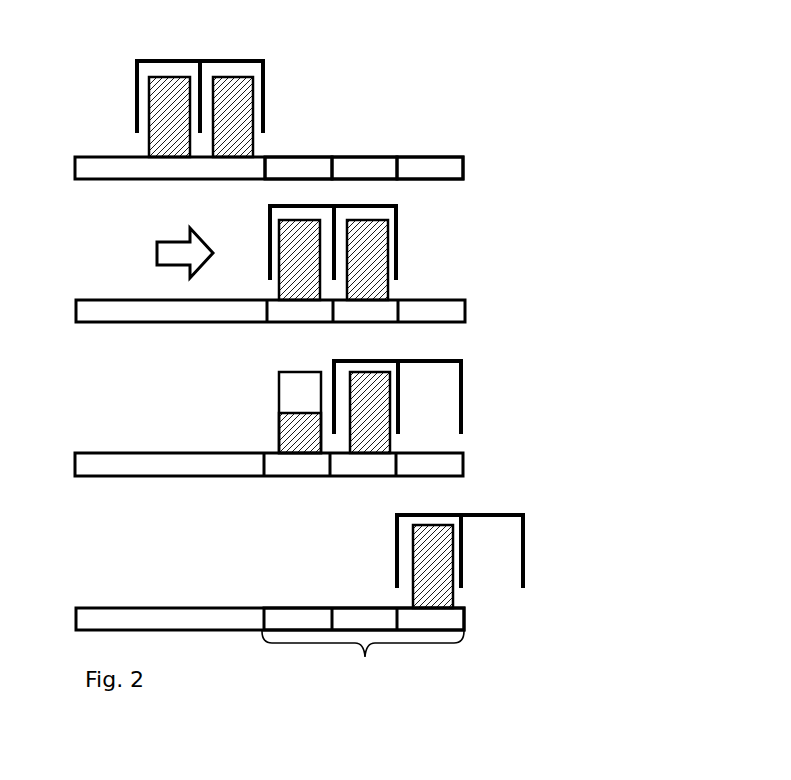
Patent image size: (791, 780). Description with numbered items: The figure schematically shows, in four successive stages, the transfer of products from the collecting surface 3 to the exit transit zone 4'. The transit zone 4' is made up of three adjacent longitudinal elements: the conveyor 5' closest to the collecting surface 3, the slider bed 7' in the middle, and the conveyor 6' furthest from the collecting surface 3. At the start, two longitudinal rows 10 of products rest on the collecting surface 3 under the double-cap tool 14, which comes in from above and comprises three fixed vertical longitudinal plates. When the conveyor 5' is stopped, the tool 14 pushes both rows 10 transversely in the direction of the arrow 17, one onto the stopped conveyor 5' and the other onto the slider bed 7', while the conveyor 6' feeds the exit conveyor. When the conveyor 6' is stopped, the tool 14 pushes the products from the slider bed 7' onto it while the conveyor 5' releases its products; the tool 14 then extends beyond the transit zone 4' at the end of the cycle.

The collecting surface 3 is at (101, 141).
The double-cap tool 14 is at (242, 52).
The longitudinal rows of products 10 is at (249, 100).
The conveyor 5' is at (305, 127).
The slider bed 7' is at (373, 127).
The conveyor 6' is at (436, 129).
The transport direction 17 is at (145, 239).
The transit zone 4' is at (363, 651).